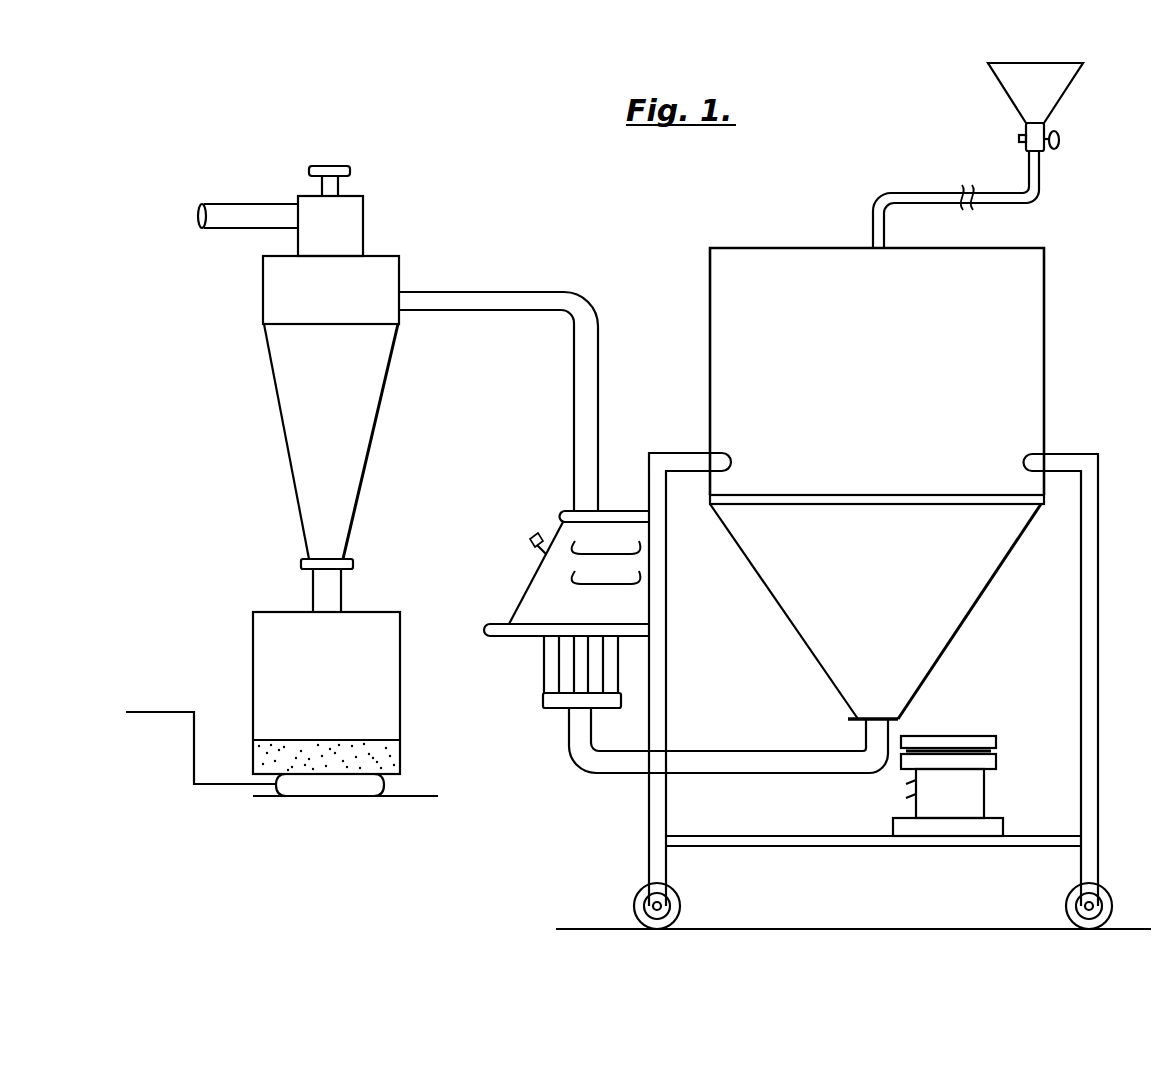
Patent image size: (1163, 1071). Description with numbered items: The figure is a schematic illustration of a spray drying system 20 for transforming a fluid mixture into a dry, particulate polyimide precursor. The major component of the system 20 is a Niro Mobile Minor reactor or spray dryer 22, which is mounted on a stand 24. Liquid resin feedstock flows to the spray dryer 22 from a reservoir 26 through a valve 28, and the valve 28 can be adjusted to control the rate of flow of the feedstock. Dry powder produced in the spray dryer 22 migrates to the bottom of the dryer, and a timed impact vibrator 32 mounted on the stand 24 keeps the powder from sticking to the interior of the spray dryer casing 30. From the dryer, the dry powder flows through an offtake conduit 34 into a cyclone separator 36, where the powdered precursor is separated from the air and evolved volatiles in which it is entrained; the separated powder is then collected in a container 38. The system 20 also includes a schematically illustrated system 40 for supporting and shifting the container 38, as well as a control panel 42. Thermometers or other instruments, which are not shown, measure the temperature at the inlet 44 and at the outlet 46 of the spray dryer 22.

The spray drying system 20 is at (672, 258).
The spray dryer 22 is at (1068, 321).
The stand 24 is at (1138, 780).
The reservoir 26 is at (1068, 92).
The valve 28 is at (1058, 140).
The spray dryer casing 30 is at (885, 585).
The timed impact vibrator 32 is at (985, 781).
The offtake conduit 34 is at (482, 296).
The cyclone separator 36 is at (277, 391).
The container 38 is at (258, 672).
The system for supporting and shifting container 40 is at (236, 796).
The control panel 42 is at (520, 597).
The inlet 44 is at (872, 243).
The outlet 46 is at (860, 723).